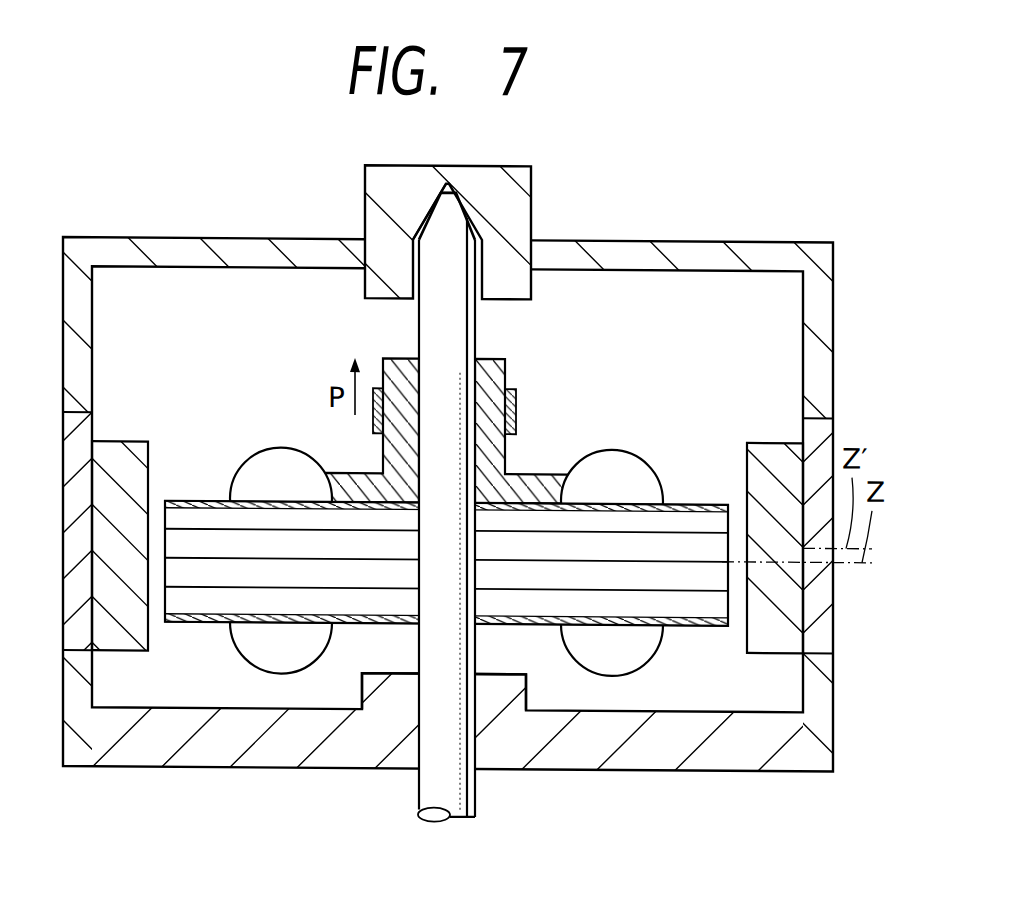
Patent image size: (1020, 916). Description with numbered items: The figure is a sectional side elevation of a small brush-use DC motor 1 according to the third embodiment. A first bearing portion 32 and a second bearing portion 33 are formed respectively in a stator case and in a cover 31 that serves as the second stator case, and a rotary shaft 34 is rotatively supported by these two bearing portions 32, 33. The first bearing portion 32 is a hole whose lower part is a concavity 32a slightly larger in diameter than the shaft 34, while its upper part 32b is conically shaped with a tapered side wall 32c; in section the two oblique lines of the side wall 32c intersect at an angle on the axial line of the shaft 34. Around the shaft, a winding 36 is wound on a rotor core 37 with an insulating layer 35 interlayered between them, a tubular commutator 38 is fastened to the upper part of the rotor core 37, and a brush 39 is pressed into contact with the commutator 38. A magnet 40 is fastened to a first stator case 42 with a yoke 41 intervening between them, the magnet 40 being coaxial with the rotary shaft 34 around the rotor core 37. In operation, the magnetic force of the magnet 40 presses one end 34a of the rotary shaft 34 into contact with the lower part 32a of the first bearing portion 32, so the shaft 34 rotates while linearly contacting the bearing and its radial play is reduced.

The motor 1 is at (686, 233).
The cover 31 is at (712, 750).
The first bearing portion 32 is at (400, 175).
The concavity 32a is at (478, 286).
The upper part of the hole 32b is at (457, 187).
The tapered side wall 32c is at (466, 240).
The second bearing portion 33 is at (527, 688).
The rotary shaft 34 is at (422, 797).
The one end of the rotary shaft 34a is at (442, 220).
The insulating layer 35 is at (685, 501).
The winding 36 is at (620, 467).
The rotor core 37 is at (200, 540).
The tubular commutator 38 is at (495, 370).
The brush 39 is at (516, 418).
The magnet 40 is at (112, 455).
The yoke 41 is at (77, 622).
The first stator case 42 is at (817, 290).